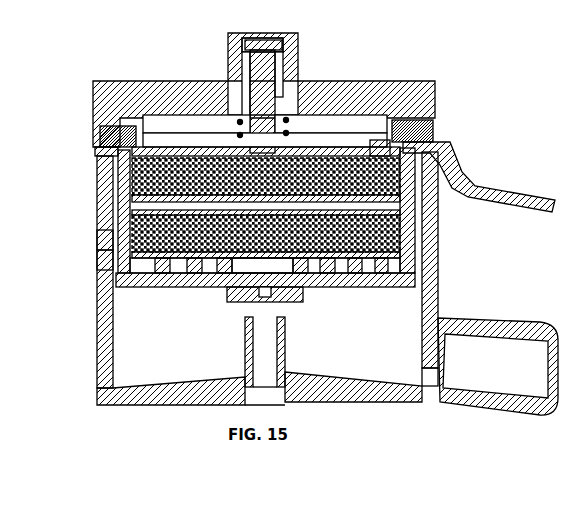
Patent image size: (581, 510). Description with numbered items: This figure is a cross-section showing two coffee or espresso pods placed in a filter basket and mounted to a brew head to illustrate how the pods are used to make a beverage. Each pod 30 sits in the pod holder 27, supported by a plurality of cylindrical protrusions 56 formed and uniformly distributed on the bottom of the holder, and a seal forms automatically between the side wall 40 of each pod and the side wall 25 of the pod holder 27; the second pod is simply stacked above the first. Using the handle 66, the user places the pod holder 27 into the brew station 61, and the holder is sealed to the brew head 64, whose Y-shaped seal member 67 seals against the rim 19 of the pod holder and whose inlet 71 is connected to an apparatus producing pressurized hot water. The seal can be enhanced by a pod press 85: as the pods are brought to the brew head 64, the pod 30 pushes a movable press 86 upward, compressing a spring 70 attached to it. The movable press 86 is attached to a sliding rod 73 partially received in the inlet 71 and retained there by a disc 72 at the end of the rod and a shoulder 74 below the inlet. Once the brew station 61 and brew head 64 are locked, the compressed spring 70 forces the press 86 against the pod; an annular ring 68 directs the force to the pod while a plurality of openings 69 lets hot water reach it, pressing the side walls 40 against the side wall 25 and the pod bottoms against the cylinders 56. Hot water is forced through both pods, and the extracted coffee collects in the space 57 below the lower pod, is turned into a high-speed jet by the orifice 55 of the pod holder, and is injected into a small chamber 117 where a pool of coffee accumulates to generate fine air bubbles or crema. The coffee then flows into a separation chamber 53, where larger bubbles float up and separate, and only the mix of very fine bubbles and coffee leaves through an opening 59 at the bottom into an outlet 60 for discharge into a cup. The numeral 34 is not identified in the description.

The rim 19 is at (110, 150).
The side wall 25 is at (97, 242).
The pod holder 27 is at (366, 290).
The coffee or espresso pod 30 is at (128, 188).
The outer wall 34 is at (97, 169).
The side wall 40 is at (97, 259).
The separation chamber 53 is at (140, 373).
The orifice 55 is at (268, 302).
The cylindrical protrusions 56 is at (132, 288).
The space 57 is at (238, 288).
The opening 59 is at (423, 377).
The outlet 60 is at (508, 327).
The brew station 61 is at (442, 244).
The brew head 64 is at (440, 94).
The handle 66 is at (478, 192).
The Y-shaped seal member 67 is at (433, 130).
The annular ring 68 is at (378, 142).
The openings 69 is at (337, 148).
The spring 70 is at (292, 118).
The inlet 71 is at (268, 34).
The disc 72 is at (250, 48).
The sliding rod 73 is at (228, 50).
The shoulder 74 is at (228, 70).
The pod press 85 is at (226, 126).
The movable press 86 is at (134, 131).
The chamber 117 is at (258, 363).